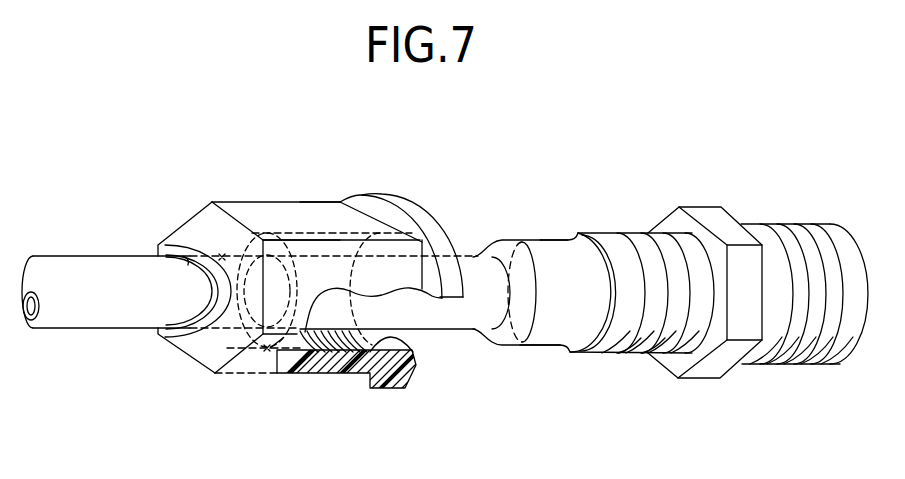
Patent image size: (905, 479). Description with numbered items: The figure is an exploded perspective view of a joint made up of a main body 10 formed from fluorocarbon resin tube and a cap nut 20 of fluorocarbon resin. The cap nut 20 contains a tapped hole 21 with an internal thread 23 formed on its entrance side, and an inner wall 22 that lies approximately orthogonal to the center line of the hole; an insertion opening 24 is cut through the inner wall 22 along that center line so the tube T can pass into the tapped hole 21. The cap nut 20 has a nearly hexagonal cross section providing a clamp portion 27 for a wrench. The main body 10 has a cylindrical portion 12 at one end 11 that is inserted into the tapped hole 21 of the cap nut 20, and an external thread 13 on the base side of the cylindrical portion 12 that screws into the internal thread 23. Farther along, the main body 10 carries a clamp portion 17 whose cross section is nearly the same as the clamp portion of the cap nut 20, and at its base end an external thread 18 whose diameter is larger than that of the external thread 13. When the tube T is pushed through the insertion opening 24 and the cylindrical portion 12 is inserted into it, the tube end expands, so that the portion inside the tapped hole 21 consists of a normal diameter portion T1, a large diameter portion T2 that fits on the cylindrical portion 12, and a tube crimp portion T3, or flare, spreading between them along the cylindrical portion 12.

The tube T is at (90, 246).
The normal diameter portion T1 is at (466, 232).
The large diameter portion T2 is at (533, 242).
The tube crimp portion T3 is at (490, 250).
The main body 10 is at (787, 214).
The end 11 is at (553, 247).
The cylindrical portion 12 is at (547, 335).
The external thread 13 is at (630, 232).
The clamp portion 17 is at (702, 206).
The external thread 18 is at (825, 223).
The cap nut 20 is at (273, 186).
The tapped hole 21 is at (413, 352).
The inner wall 22 is at (267, 352).
The internal thread 23 is at (347, 388).
The insertion opening 24 is at (188, 255).
The clamp portion 27 is at (338, 200).